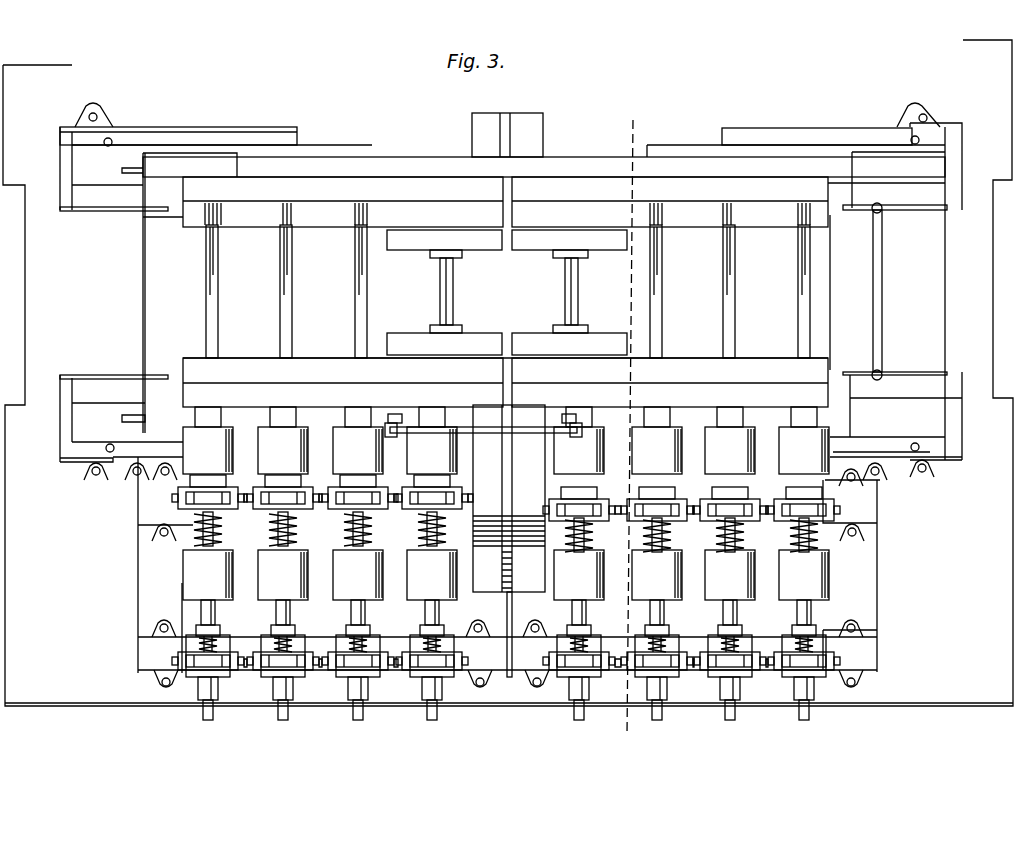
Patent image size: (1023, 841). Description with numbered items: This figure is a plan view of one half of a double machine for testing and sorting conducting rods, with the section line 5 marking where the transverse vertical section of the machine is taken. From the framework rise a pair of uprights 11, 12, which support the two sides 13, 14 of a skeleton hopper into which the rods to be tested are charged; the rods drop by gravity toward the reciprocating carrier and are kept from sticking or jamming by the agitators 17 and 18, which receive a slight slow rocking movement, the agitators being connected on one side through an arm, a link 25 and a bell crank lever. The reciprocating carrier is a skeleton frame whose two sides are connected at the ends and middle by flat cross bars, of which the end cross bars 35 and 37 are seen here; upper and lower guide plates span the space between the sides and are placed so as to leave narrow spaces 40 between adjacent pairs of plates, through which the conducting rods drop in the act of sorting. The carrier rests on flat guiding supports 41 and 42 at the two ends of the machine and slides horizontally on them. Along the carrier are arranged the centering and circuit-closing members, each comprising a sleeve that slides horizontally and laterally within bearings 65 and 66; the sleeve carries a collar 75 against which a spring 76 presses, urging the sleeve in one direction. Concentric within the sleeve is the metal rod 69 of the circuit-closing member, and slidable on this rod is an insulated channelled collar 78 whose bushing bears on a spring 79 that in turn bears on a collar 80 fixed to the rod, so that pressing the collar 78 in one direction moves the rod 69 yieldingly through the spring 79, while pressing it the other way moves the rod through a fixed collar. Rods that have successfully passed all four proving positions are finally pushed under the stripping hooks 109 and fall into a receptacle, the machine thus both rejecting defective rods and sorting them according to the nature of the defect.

The section line 5- 5 is at (629, 422).
The upright 11 is at (568, 185).
The upright 12 is at (813, 387).
The side of skeleton hopper 13 is at (383, 205).
The side of skeleton hopper 14 is at (660, 200).
The agitator 17 is at (531, 246).
The agitator 18 is at (498, 337).
The link 25 is at (495, 430).
The flat cross bar 35 is at (162, 293).
The flat cross bar 37 is at (887, 291).
The narrow space 40 is at (282, 272).
The flat guiding support 41 is at (118, 153).
The flat guiding support 42 is at (845, 138).
The bearing 65 is at (345, 443).
The bearing 66 is at (355, 588).
The metal rod 69 is at (213, 615).
The collar 75 is at (197, 508).
The spring 76 is at (197, 542).
The collar 78 is at (897, 707).
The spring 79 is at (805, 647).
The collar 80 is at (203, 635).
The stripping hook 109 is at (112, 209).